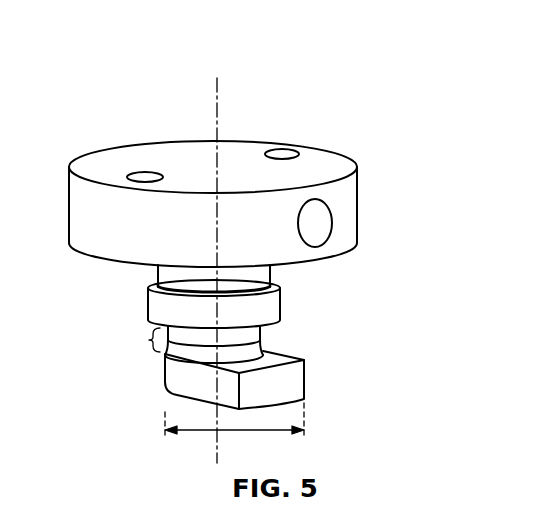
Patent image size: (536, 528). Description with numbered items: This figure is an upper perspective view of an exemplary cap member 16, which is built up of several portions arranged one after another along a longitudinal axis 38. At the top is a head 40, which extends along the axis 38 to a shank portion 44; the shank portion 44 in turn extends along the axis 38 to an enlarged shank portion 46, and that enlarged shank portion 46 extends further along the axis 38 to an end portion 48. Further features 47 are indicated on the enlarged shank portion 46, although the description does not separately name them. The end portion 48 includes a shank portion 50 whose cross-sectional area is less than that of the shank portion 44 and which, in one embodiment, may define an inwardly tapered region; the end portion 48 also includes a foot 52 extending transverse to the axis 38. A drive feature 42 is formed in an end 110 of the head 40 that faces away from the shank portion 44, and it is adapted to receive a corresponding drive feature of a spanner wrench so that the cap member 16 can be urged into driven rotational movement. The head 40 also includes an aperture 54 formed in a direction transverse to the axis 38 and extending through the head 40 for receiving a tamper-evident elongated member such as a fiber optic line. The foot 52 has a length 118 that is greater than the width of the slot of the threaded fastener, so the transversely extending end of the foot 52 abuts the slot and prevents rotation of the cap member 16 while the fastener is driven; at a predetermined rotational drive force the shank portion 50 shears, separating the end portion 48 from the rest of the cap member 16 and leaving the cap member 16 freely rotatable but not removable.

The cap member 16 is at (338, 56).
The longitudinal axis 38 is at (217, 90).
The head 40 is at (360, 182).
The drive feature 42 is at (143, 177).
The shank portion 44 is at (155, 272).
The enlarged shank portion 46 is at (147, 302).
The grooves 47 is at (276, 282).
The end portion 48 is at (134, 412).
The shank portion 50 is at (148, 340).
The foot 52 is at (304, 378).
The side aperture 54 is at (320, 217).
The end 110 is at (335, 150).
The length 118 is at (267, 432).